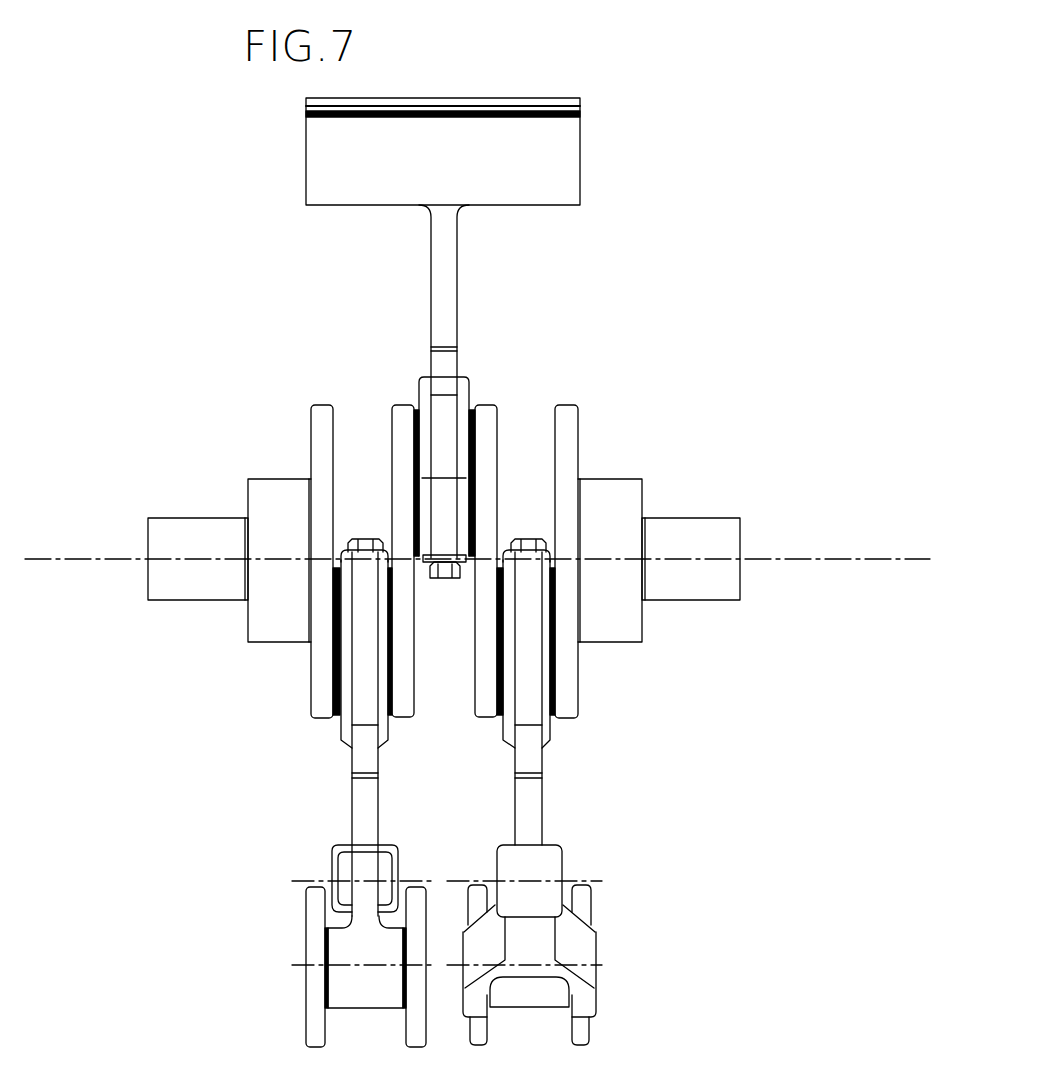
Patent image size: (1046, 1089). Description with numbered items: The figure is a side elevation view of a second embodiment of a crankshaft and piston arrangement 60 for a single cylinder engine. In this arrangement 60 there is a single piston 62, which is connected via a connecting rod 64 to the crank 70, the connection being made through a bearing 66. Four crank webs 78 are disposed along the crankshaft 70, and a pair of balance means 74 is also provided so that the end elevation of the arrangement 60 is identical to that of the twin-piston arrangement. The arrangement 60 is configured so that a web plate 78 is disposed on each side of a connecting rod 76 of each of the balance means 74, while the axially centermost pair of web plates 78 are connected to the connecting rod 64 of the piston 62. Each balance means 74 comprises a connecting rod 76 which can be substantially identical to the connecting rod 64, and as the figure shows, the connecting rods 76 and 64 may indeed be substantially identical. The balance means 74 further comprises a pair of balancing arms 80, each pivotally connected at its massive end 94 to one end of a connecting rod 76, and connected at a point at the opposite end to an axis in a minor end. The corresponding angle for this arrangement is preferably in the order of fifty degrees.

The crankshaft and piston arrangement 60 is at (538, 338).
The piston 62 is at (542, 153).
The connecting rod 64 is at (443, 293).
The bearing 66 is at (475, 435).
The crankshaft 70 is at (168, 542).
The balance means 74 is at (493, 803).
The connecting rod 76 is at (370, 793).
The crank web 78 is at (318, 437).
The balancing arm 80 is at (343, 873).
The massive end 94 is at (300, 1025).